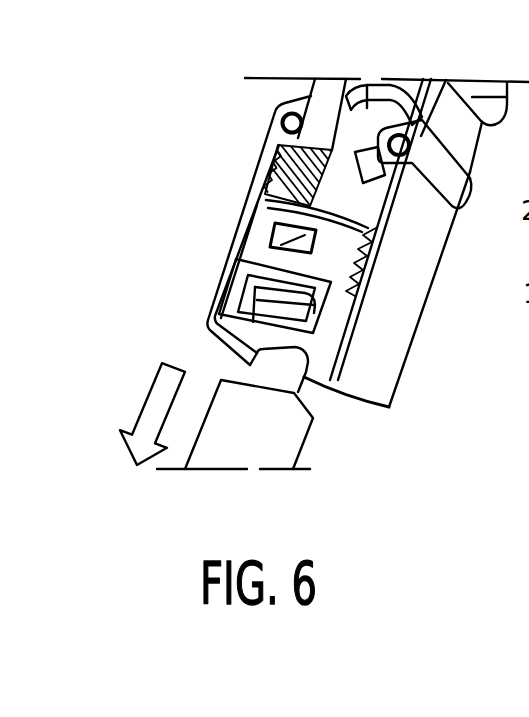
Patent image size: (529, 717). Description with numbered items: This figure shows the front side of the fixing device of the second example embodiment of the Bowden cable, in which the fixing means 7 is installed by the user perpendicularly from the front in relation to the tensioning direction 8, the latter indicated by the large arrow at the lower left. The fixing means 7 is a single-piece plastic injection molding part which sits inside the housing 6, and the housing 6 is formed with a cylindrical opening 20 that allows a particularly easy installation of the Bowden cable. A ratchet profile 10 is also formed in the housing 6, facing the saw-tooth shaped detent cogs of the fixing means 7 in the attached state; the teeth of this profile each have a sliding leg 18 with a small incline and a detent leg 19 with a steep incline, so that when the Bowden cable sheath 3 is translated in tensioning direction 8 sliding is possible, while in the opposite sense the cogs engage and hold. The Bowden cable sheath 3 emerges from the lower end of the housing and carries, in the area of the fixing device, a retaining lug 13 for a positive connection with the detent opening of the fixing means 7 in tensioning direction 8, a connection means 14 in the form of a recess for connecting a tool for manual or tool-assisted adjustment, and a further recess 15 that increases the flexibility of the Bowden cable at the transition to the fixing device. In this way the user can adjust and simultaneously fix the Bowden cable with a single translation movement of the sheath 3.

The Bowden cable sheath 3 is at (282, 442).
The housing 6 is at (452, 106).
The fixing means 7 is at (253, 233).
The tensioning direction 8 is at (136, 408).
The ratchet profile 10 is at (247, 197).
The retaining lug 13 is at (270, 250).
The connection means 14 is at (283, 312).
The recess 15 is at (283, 386).
The sliding leg 18 is at (263, 160).
The detent leg 19 is at (253, 183).
The cylindrical opening 20 is at (375, 127).